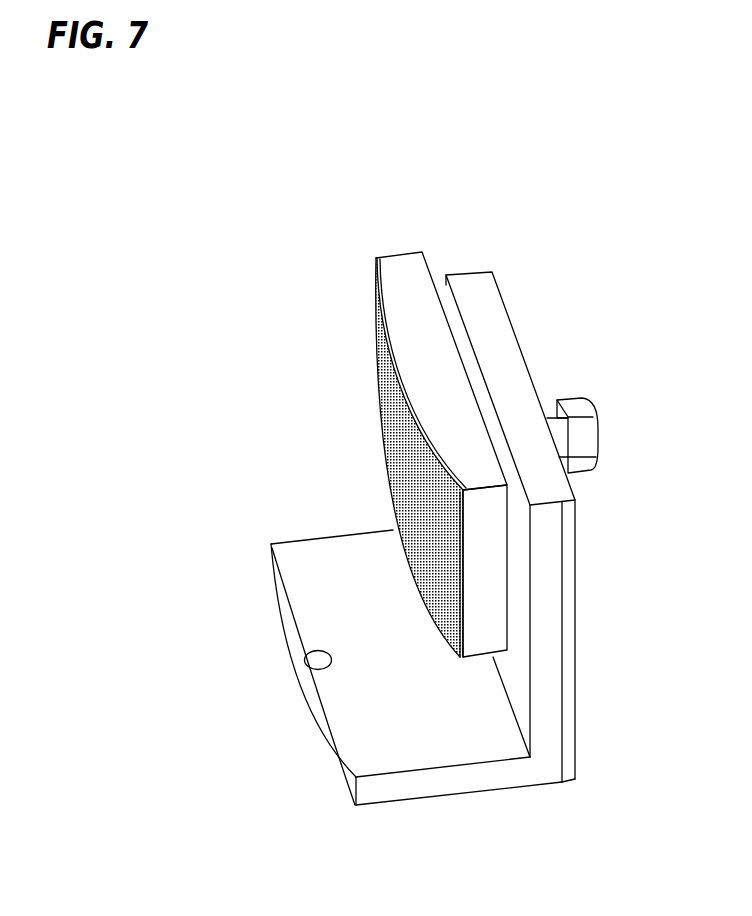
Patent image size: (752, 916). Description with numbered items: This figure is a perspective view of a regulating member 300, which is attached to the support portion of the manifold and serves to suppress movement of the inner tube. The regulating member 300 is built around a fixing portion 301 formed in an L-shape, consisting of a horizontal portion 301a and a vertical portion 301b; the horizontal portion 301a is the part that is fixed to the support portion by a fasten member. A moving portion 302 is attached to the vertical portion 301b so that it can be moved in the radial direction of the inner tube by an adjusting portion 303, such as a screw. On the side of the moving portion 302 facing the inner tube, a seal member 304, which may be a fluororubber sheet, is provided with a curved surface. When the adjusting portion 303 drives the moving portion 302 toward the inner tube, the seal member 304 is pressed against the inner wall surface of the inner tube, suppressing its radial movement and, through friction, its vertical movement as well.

The regulating member 300 is at (317, 188).
The fixing portion 301 is at (652, 728).
The horizontal portion 301a is at (483, 773).
The vertical portion 301b is at (570, 741).
The moving portion 302 is at (403, 262).
The adjusting portion 303 is at (575, 403).
The seal member 304 is at (377, 258).